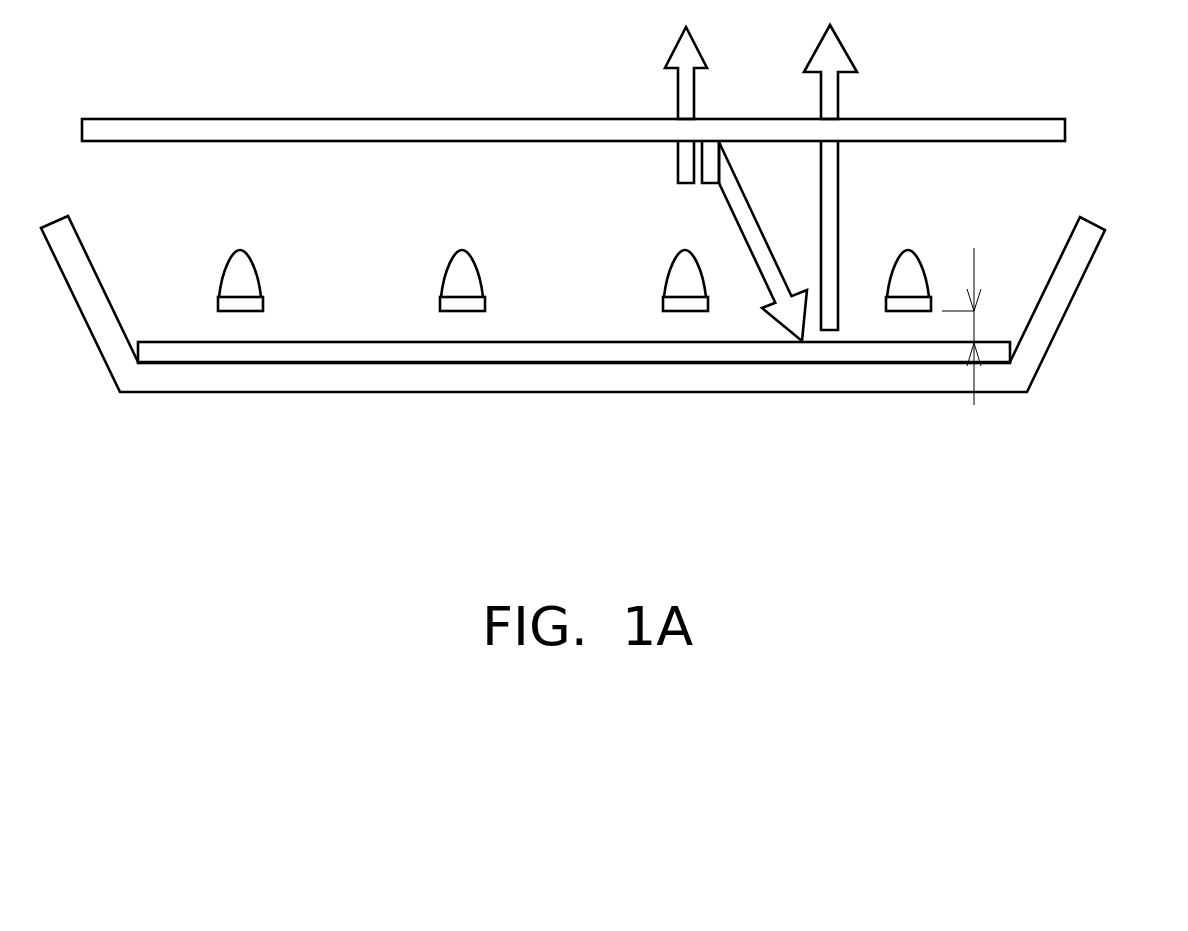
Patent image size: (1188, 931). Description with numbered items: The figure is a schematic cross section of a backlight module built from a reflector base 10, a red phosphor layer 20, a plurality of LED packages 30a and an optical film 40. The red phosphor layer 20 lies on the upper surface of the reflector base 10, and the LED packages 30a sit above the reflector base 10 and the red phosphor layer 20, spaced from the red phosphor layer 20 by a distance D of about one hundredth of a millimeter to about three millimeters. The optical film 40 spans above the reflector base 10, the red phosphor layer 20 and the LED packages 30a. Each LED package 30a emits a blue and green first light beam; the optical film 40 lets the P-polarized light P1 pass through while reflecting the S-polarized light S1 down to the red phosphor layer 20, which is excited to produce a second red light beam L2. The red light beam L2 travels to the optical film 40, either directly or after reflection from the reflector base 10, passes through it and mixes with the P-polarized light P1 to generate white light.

The reflector base 10 is at (1070, 278).
The red phosphor layer 20 is at (933, 353).
The LED packages 30a is at (237, 262).
The optical film 40 is at (1052, 132).
The P-polarized light P1 is at (678, 95).
The S-polarized light S1 is at (742, 213).
The second (red) light beam L2 is at (833, 193).
The distance D is at (975, 325).